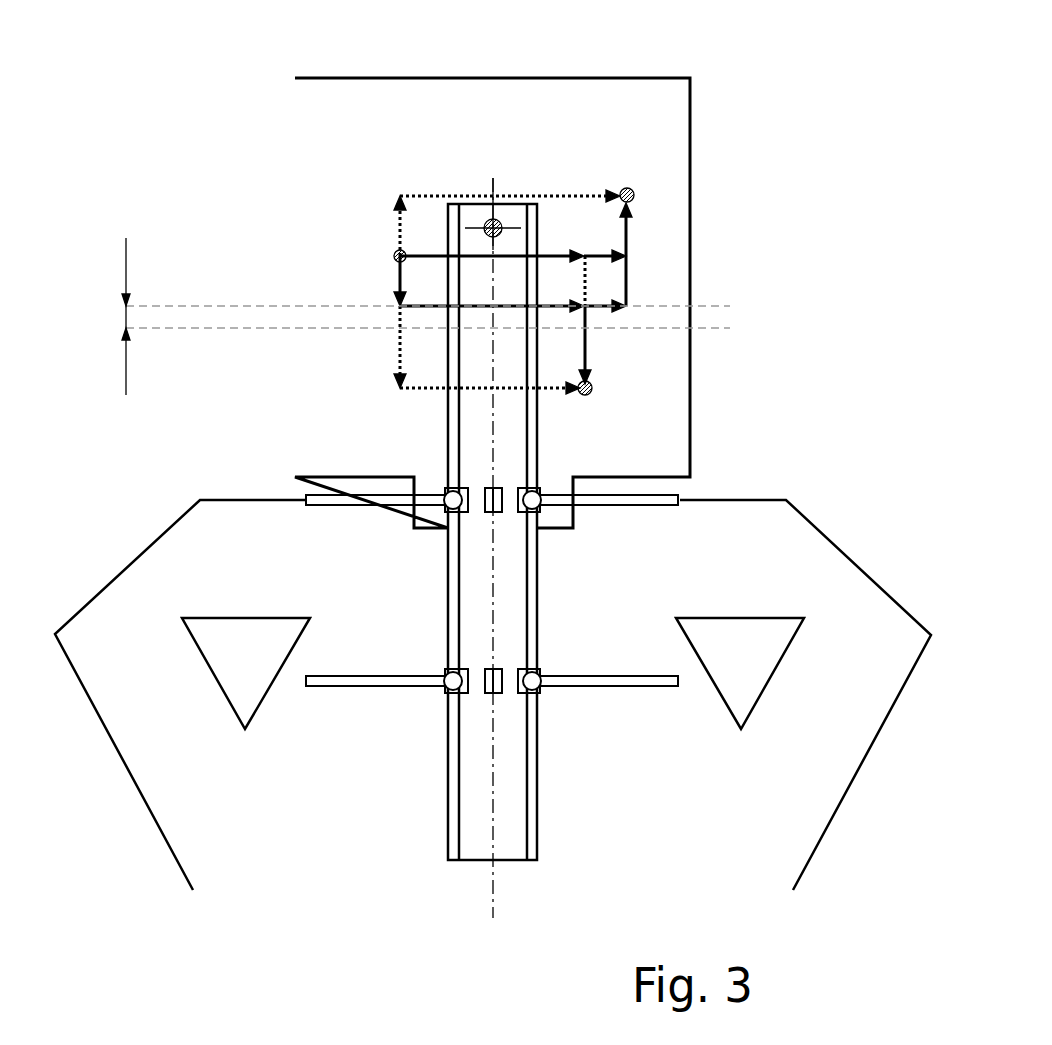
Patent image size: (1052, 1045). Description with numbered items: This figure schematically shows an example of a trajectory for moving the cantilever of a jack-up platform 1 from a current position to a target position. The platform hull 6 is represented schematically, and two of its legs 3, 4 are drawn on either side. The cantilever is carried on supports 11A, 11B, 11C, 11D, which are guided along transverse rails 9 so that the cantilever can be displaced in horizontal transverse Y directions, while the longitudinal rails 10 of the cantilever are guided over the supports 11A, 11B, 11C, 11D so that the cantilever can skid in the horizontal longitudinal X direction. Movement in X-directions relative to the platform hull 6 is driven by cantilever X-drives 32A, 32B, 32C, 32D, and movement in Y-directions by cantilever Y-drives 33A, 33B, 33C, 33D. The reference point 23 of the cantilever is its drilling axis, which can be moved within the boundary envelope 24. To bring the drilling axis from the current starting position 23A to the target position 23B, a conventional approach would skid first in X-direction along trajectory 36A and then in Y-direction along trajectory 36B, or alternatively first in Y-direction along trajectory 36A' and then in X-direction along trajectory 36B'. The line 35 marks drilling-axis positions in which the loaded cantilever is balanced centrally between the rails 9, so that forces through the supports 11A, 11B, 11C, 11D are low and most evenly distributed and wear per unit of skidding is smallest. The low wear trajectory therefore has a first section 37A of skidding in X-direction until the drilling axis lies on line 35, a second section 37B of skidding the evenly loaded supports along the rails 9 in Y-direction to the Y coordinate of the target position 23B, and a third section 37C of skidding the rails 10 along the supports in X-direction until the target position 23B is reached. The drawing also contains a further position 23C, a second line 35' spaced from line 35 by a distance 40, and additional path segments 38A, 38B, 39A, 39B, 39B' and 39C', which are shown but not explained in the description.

The jack-up platform 1 is at (110, 847).
The leg 3 is at (200, 630).
The leg 4 is at (785, 628).
The platform hull 6 is at (177, 767).
The transverse rails 9 is at (665, 507).
The longitudinal rails 10 is at (530, 655).
The support 11A is at (428, 530).
The support 11B is at (545, 528).
The support 11C is at (445, 693).
The support 11D is at (545, 693).
The reference point (drilling axis) 23 is at (490, 220).
The current starting position 23A is at (394, 256).
The target position 23B is at (594, 390).
The third position 23C is at (636, 193).
The boundary envelope 24 is at (383, 77).
The cantilever X-drive 32A is at (489, 513).
The cantilever X-drive 32B is at (500, 513).
The cantilever X-drive 32C is at (489, 694).
The cantilever X-drive 32D is at (500, 694).
The cantilever Y-drive 33A is at (450, 508).
The cantilever Y-drive 33B is at (524, 514).
The cantilever Y-drive 33C is at (450, 689).
The cantilever Y-drive 33D is at (524, 695).
The line 35 is at (428, 267).
The second reference plane 35' is at (428, 369).
The trajectory 36A is at (309, 347).
The trajectory 36A' is at (521, 173).
The trajectory 36B is at (526, 423).
The trajectory 36B' is at (683, 281).
The first section of low wear trajectory 37A is at (394, 304).
The second section of low wear trajectory 37B is at (580, 312).
The third section of low wear trajectory 37C is at (592, 378).
The lifting movement 38A is at (396, 198).
The horizontal return movement 38B is at (624, 190).
The horizontal movement 39A is at (612, 250).
The lifting movement 39B is at (697, 247).
The horizontal movement 39B' is at (683, 311).
The horizontal movement 39C' is at (682, 249).
The distance between planes 40 is at (125, 318).